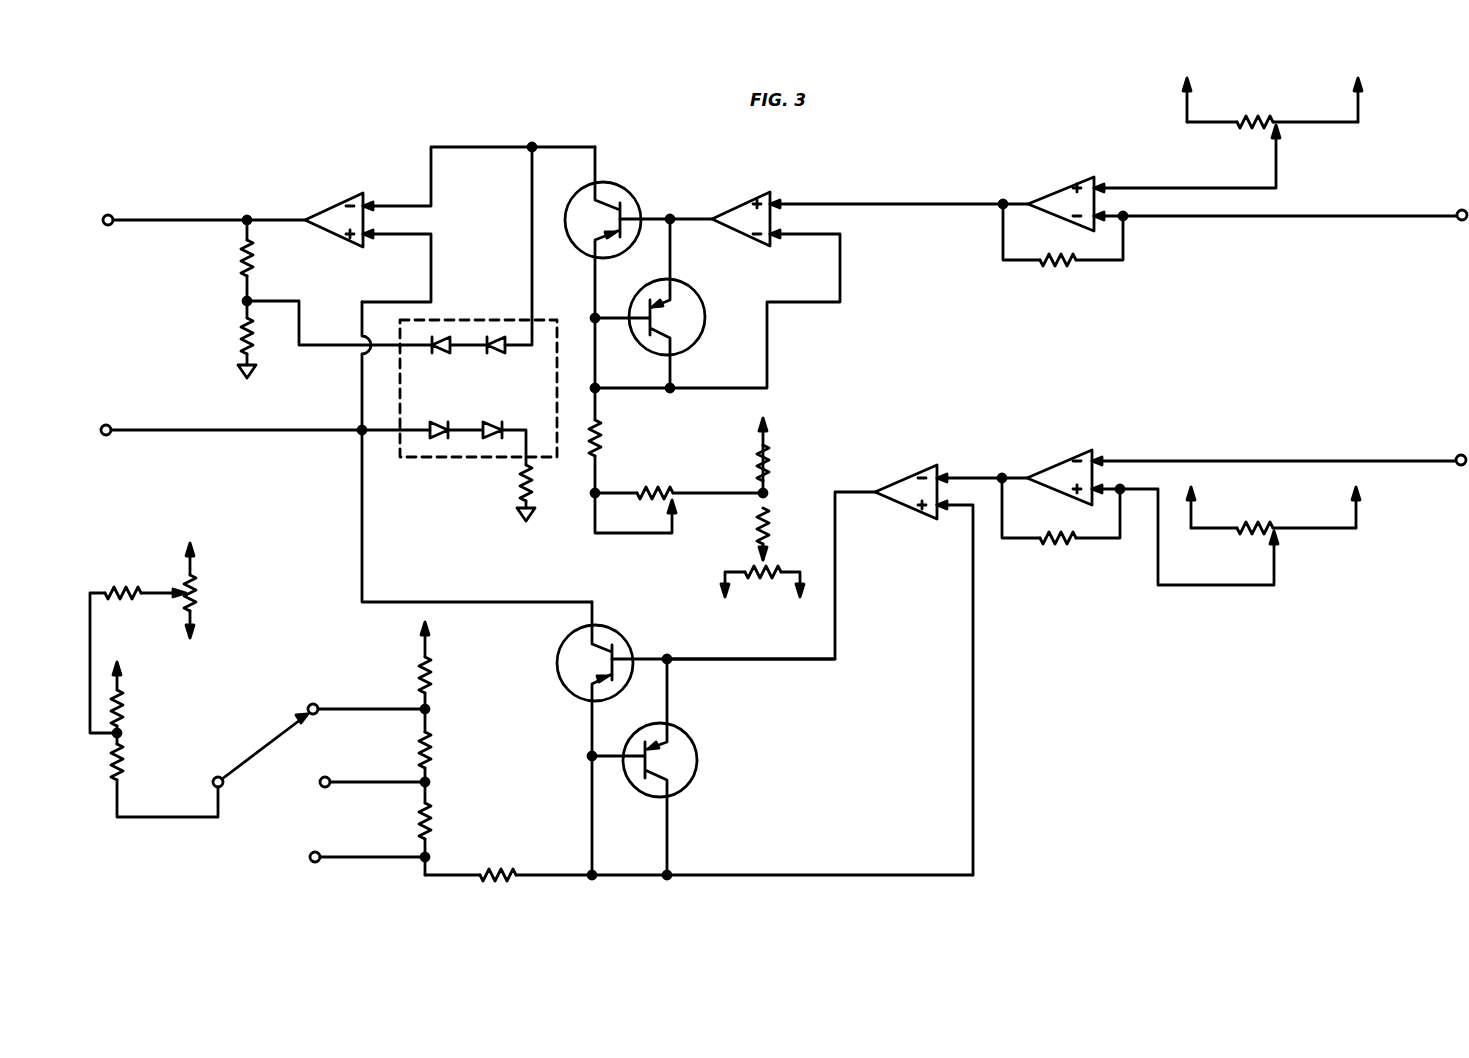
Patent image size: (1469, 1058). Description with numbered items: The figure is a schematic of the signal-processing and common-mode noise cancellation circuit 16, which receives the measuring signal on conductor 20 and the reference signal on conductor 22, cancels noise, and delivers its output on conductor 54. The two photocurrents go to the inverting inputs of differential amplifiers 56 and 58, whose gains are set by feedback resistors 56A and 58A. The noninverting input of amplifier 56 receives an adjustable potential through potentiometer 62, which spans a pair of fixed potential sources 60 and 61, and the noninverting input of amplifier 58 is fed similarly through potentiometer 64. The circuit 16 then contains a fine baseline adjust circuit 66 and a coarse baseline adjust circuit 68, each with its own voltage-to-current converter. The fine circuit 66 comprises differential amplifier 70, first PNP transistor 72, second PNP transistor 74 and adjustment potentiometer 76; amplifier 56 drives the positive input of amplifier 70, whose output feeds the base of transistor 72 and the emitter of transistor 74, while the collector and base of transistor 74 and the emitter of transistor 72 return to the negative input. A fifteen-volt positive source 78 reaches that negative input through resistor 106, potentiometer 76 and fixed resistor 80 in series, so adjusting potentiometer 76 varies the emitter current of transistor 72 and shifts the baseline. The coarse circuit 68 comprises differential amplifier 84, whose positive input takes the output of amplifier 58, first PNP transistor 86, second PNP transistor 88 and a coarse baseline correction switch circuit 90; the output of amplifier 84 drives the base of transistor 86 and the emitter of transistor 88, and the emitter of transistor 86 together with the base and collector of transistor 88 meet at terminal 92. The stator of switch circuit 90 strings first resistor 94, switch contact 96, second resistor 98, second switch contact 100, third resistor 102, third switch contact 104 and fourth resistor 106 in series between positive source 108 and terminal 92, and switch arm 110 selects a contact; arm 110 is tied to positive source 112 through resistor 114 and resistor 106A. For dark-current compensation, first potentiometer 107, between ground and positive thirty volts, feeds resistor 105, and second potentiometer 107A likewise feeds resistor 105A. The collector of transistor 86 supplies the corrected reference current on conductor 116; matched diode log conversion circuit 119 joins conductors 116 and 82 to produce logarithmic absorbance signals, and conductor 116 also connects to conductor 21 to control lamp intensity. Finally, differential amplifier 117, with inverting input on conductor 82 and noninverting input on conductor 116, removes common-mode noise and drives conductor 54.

The signal-processing and common-mode noise cancellation circuit 16 is at (398, 131).
The conductor 20 is at (1333, 219).
The conductor 21 is at (214, 430).
The conductor 22 is at (1331, 458).
The conductor 54 is at (213, 219).
The differential amplifier 56 is at (1061, 195).
The feedback resistor 56A is at (1077, 262).
The differential amplifier 58 is at (1062, 462).
The feedback resistor 58A is at (1067, 544).
The source of fixed potential 60 is at (1189, 94).
The source of fixed potential 61 is at (1358, 92).
The adjustable potentiometer 62 is at (1310, 142).
The adjustable potentiometer 64 is at (1298, 563).
The fine baseline adjust circuit 66 is at (683, 175).
The coarse baseline adjust circuit 68 is at (682, 636).
The differential amplifier 70 is at (743, 206).
The first PNP transistor 72 is at (608, 188).
The second PNP transistor 74 is at (690, 307).
The adjustment potentiometer 76 is at (672, 486).
The source of positive potential 78 is at (769, 429).
The fixed resistor 80 is at (603, 439).
The conductor 82 is at (470, 149).
The differential amplifier 84 is at (905, 477).
The first PNP transistor 86 is at (613, 639).
The second PNP transistor 88 is at (685, 790).
The coarse baseline correction switch circuit 90 is at (268, 824).
The terminal 92 is at (592, 878).
The first resistor 94 is at (436, 690).
The switch contact 96 is at (316, 704).
The second resistor 98 is at (436, 748).
The second switch contact 100 is at (326, 779).
The third resistor 102 is at (436, 817).
The third switch contact 104 is at (317, 857).
The resistor 105 is at (768, 518).
The resistor 105A is at (117, 588).
The resistor 106 is at (773, 460).
The resistor 106A is at (123, 710).
The first potentiometer 107 is at (738, 540).
The second potentiometer 107A is at (204, 598).
The source of positive potential 108 is at (432, 624).
The switch arm 110 is at (258, 748).
The source of positive potential 112 is at (118, 674).
The resistor 114 is at (121, 770).
The conductor 116 is at (357, 505).
The differential amplifier 117 is at (329, 215).
The matched diode log conversion circuit 119 is at (440, 330).